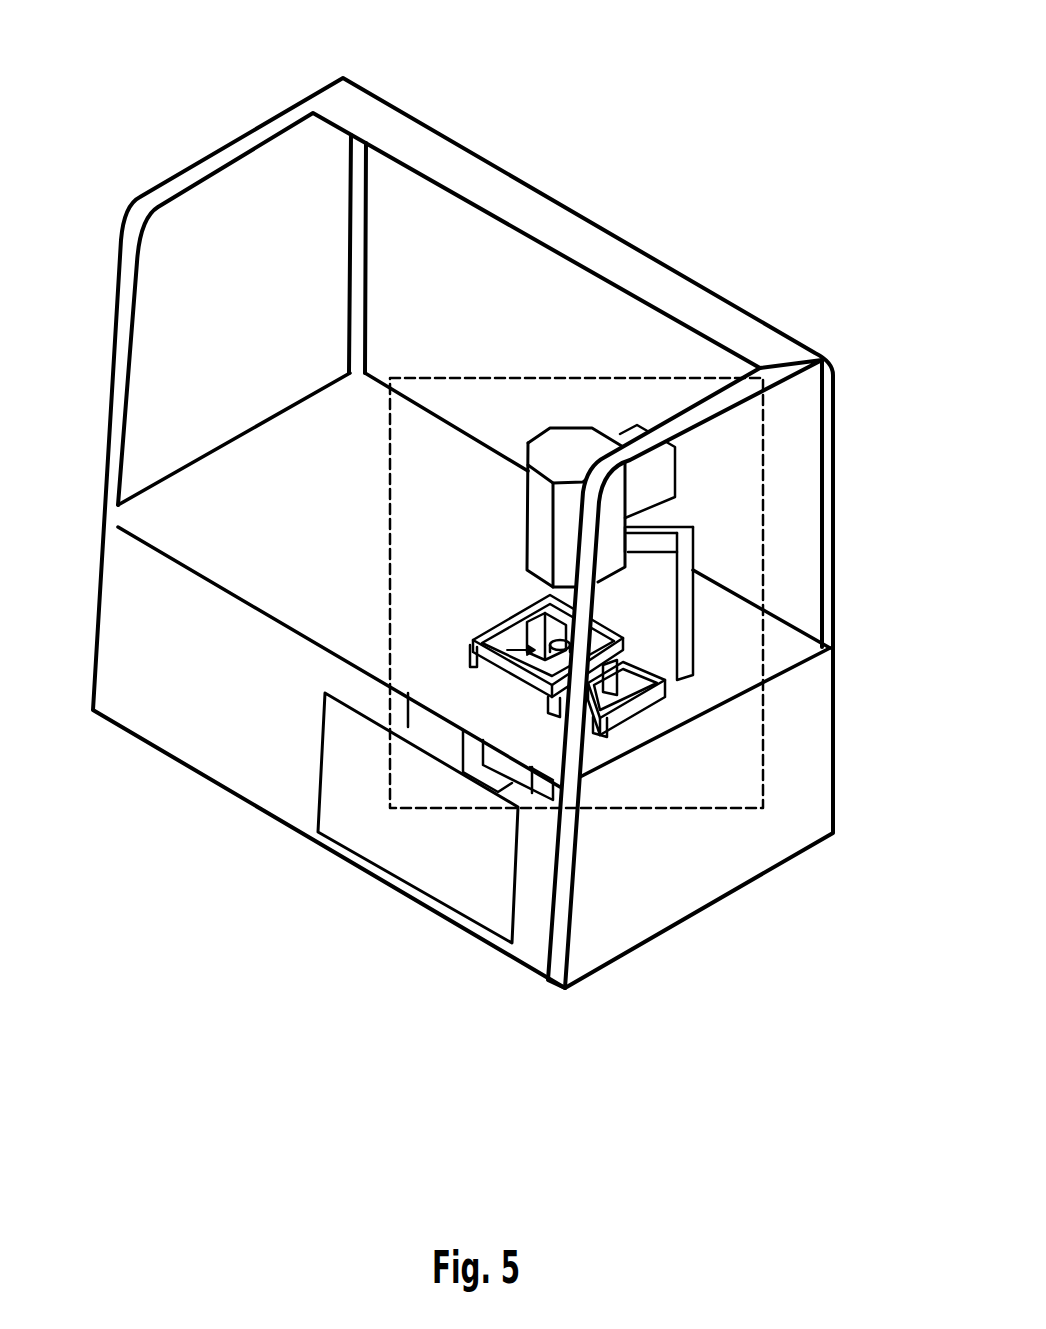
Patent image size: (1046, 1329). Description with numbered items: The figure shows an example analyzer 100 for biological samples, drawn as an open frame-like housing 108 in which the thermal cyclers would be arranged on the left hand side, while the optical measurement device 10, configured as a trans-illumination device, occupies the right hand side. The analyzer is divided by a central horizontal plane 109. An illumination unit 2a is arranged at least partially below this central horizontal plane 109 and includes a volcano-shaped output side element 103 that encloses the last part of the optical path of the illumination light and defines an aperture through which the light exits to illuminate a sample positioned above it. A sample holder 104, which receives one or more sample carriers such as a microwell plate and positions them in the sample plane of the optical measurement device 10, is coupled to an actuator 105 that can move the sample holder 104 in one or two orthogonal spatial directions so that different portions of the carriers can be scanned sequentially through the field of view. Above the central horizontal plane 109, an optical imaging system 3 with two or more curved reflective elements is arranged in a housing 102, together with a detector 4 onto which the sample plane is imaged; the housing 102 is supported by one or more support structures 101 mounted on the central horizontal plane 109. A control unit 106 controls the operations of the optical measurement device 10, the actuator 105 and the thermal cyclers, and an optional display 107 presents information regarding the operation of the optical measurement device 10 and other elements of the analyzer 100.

The analyzer 100 is at (181, 101).
The housing 108 is at (410, 135).
The central horizontal plane 109 is at (206, 525).
The optical imaging system 3 is at (553, 450).
The optical measurement device 10 is at (672, 397).
The detector 4 is at (632, 500).
The support structure 101 is at (695, 616).
The housing 102 is at (535, 508).
The volcano-shaped output side element 103 is at (477, 645).
The sample holder 104 is at (610, 657).
The actuator 105 is at (627, 712).
The control unit 106 is at (420, 727).
The display 107 is at (362, 837).
The illumination unit 2a is at (528, 767).